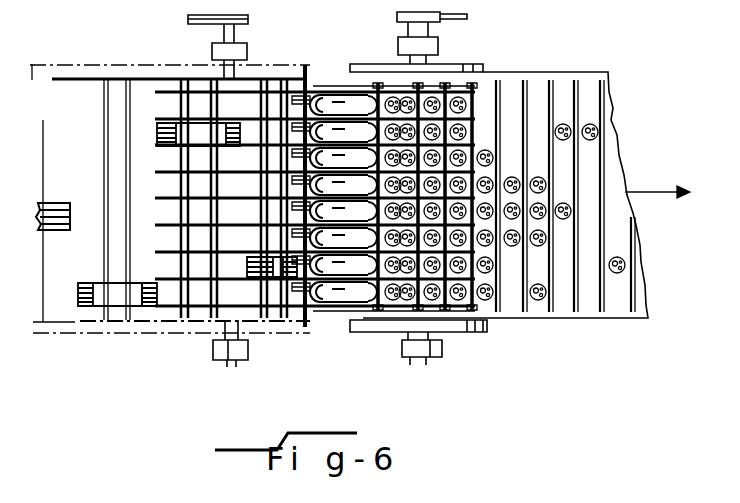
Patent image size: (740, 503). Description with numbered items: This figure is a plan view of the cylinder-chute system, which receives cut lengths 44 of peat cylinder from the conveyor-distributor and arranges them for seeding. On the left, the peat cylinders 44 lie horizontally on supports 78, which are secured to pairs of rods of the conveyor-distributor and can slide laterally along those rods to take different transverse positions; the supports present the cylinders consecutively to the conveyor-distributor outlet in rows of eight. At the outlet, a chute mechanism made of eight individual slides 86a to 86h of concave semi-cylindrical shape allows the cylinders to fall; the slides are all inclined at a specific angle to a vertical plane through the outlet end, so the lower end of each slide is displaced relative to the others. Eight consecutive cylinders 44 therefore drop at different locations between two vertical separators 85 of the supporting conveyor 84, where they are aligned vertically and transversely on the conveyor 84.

The lengths 44 is at (202, 133).
The support 78 is at (147, 308).
The supporting conveyor 84 is at (559, 53).
The vertical separators 85 is at (577, 88).
The slide 86h is at (340, 92).
The slide 86a is at (340, 298).